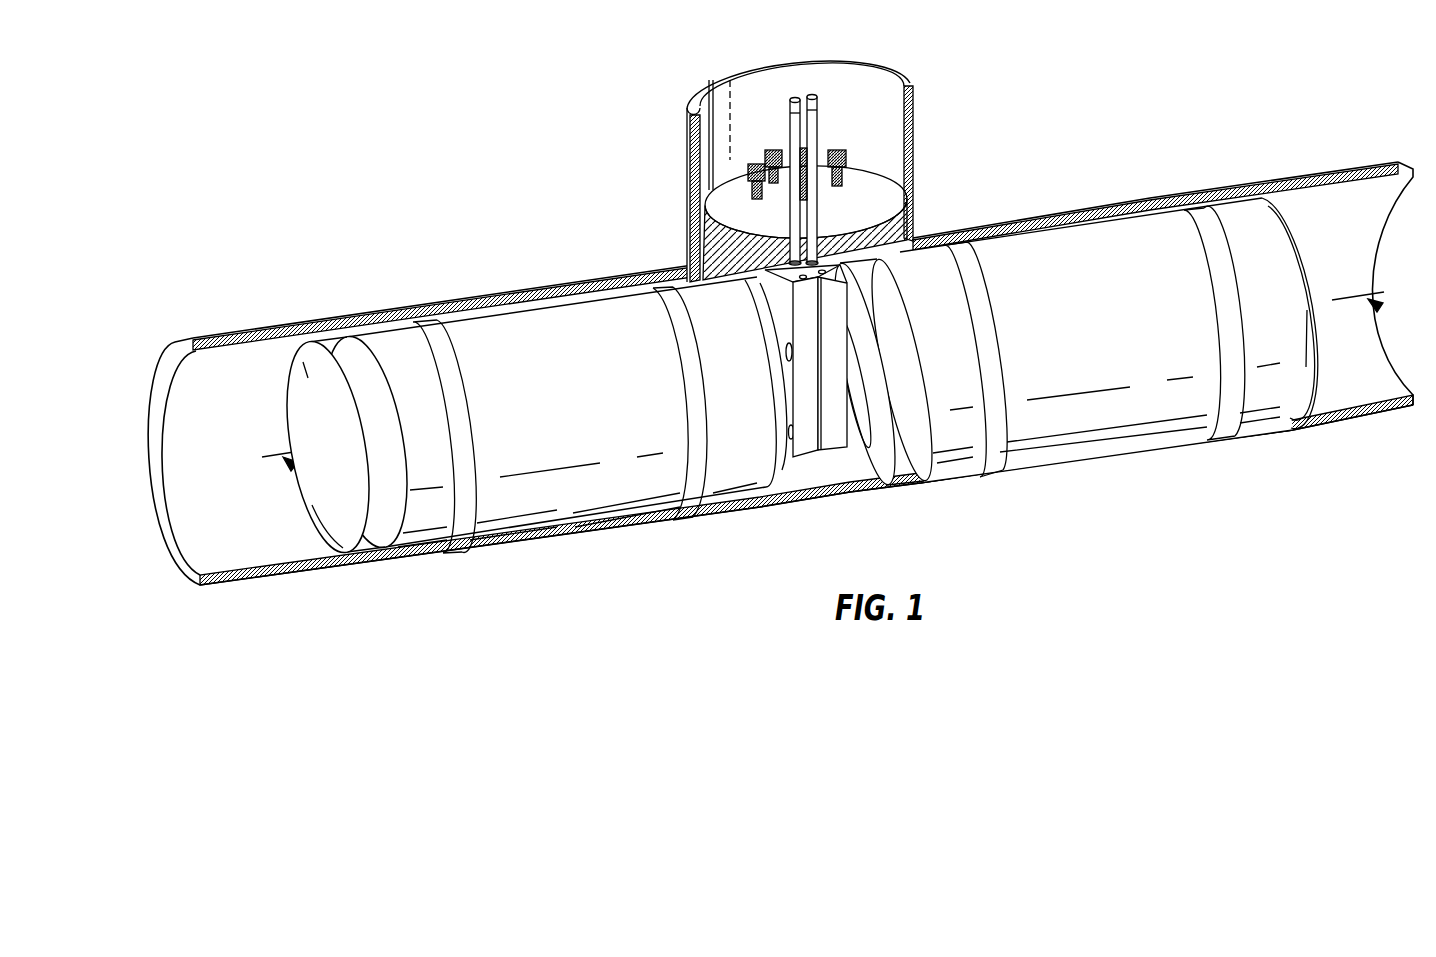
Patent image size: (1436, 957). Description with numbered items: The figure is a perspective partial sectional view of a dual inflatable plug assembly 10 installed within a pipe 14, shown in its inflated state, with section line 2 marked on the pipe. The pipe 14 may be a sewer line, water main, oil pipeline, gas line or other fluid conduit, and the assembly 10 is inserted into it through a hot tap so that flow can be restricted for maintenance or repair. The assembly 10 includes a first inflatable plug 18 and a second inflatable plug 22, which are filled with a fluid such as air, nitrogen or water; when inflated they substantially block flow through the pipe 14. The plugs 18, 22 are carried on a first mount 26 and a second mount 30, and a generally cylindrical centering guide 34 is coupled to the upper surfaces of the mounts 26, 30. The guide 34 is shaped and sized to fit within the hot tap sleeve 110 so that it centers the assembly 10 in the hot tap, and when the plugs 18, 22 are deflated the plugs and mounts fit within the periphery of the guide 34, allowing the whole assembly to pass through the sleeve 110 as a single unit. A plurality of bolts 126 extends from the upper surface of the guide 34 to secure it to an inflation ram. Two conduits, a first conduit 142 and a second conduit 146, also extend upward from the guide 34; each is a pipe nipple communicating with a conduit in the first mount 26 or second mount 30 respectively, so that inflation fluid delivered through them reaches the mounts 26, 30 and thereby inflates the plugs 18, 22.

The section line 2- 2 is at (296, 466).
The dual inflatable plug assembly 10 is at (1036, 105).
The pipe 14 is at (1323, 181).
The first inflatable plug 18 is at (563, 517).
The second inflatable plug 22 is at (1133, 430).
The first mount 26 is at (813, 447).
The second mount 30 is at (837, 443).
The centering guide 34 is at (885, 218).
The hot tap sleeve 110 is at (690, 180).
The bolts 126 is at (757, 165).
The first conduit 142 is at (795, 98).
The second conduit 146 is at (812, 96).